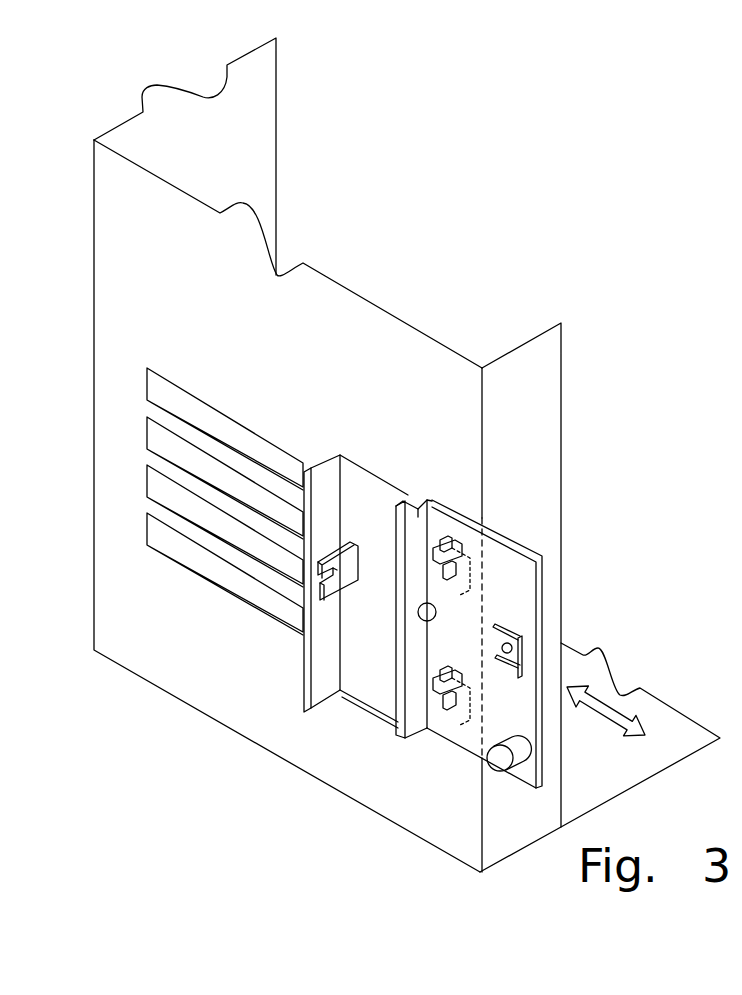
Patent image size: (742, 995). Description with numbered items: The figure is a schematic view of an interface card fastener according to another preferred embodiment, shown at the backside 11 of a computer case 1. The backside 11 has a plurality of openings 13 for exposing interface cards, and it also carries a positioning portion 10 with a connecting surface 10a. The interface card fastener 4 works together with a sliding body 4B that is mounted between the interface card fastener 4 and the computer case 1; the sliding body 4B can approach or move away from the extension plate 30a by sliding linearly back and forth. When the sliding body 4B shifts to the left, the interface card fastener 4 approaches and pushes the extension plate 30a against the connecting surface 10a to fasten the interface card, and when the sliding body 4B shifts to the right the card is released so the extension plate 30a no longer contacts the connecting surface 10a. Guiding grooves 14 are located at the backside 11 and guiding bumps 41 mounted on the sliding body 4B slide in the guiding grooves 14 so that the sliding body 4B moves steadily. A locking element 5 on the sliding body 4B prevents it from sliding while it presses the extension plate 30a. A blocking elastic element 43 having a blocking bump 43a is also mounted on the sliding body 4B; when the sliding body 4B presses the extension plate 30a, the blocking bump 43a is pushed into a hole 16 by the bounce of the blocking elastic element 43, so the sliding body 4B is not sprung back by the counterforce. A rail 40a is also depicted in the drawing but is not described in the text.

The computer case 1 is at (407, 455).
The backside 11 is at (174, 655).
The openings 13 is at (140, 370).
The positioning portion 10 is at (332, 621).
The connecting surface 10a is at (320, 687).
The extension plate 30a is at (332, 560).
The guide rail 40a is at (397, 737).
The hole 16 is at (420, 610).
The interface card fastener 4 is at (550, 595).
The guiding bumps 41 is at (458, 550).
The sliding body 4B is at (510, 557).
The guiding grooves 14 is at (443, 543).
The blocking bump 43a is at (516, 676).
The locking element 5 is at (505, 760).
The blocking elastic element 43 is at (513, 680).